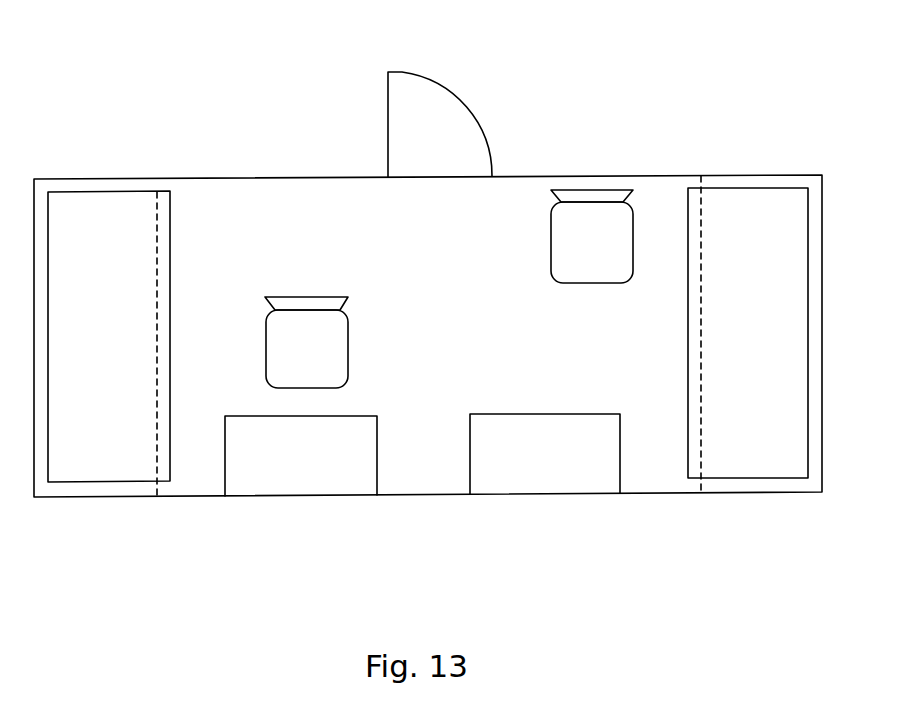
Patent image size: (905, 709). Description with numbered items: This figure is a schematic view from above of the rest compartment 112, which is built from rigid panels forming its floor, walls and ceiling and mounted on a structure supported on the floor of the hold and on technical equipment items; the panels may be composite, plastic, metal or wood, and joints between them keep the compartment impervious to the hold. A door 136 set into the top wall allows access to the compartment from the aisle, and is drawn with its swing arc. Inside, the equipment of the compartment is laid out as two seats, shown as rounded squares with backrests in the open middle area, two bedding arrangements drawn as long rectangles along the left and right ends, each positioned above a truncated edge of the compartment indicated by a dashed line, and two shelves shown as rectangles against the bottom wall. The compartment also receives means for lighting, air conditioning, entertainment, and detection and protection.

The rest compartment 112 is at (408, 468).
The door 136 is at (455, 110).